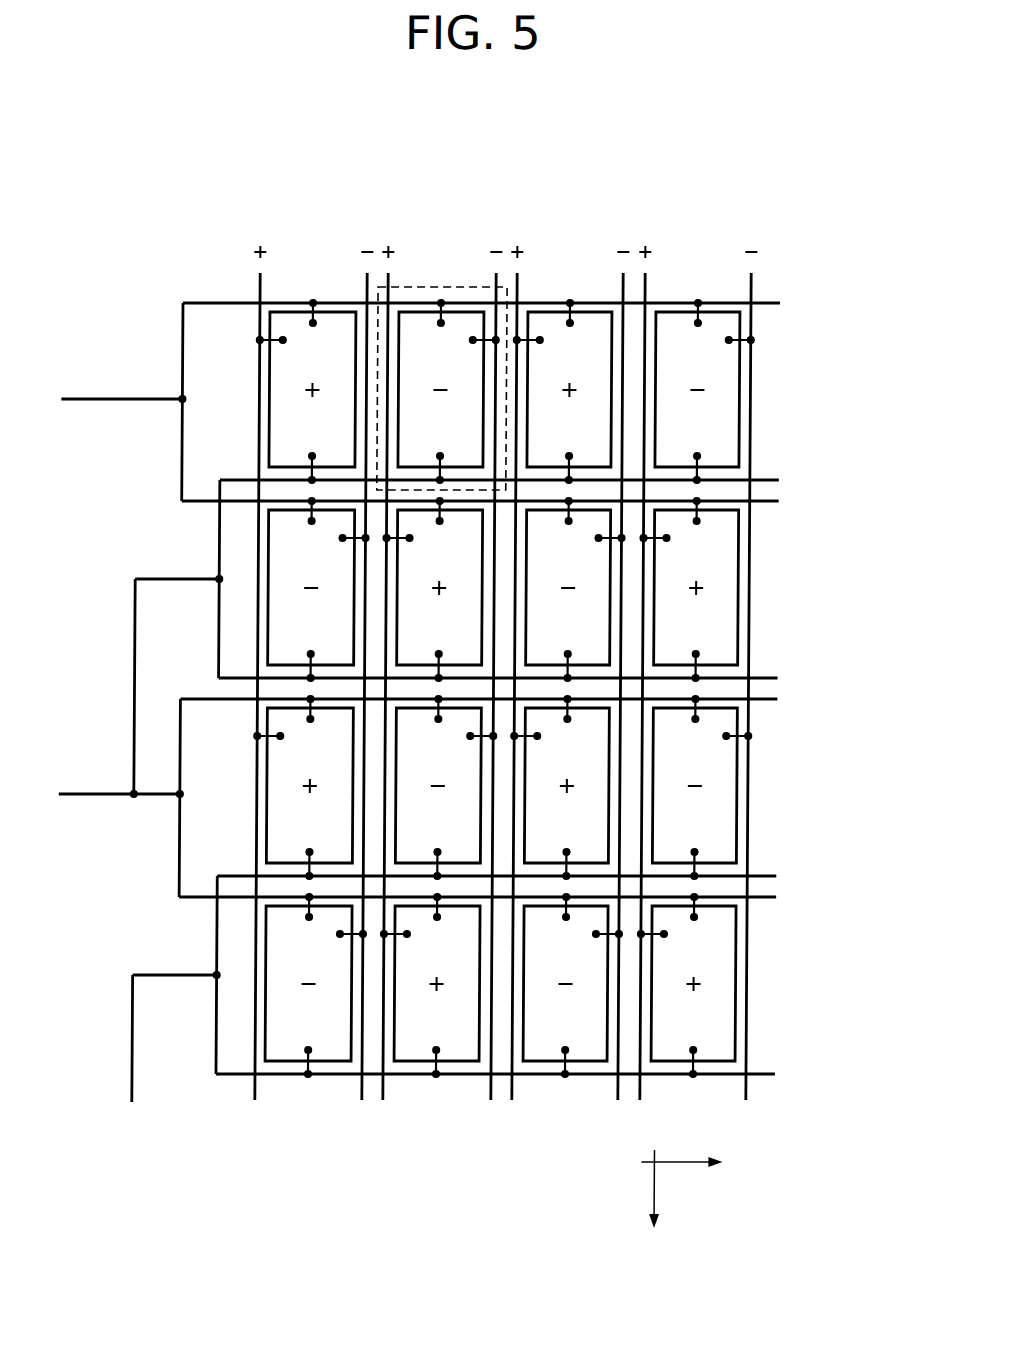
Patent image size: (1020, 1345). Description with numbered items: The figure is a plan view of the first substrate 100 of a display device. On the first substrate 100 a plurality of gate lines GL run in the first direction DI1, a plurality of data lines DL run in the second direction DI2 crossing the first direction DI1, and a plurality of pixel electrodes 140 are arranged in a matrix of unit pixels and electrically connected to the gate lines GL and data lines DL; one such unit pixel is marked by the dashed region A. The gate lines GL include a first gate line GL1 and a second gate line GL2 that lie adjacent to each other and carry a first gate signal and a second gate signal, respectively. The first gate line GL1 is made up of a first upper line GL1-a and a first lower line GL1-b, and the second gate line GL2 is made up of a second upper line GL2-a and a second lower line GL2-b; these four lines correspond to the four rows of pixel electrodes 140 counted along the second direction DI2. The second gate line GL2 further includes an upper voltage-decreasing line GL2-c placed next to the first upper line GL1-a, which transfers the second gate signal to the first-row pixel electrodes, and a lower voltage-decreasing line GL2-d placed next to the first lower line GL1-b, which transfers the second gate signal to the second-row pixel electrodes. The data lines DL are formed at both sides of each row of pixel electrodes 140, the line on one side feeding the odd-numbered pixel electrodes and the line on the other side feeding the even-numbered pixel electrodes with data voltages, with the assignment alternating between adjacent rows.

The first substrate 100 is at (794, 279).
The pixel electrode 140 is at (285, 361).
The data lines DL is at (752, 200).
The gate lines GL is at (57, 535).
The first gate line GL1 is at (83, 400).
The second gate line GL2 is at (80, 793).
The first upper line GL1-a is at (780, 303).
The first lower line GL1-b is at (780, 501).
The second upper line GL2-a is at (780, 699).
The second lower line GL2-b is at (780, 897).
The upper voltage-decreasing line GL2-c is at (780, 480).
The lower voltage-decreasing line GL2-d is at (780, 678).
The pixel region A is at (441, 287).
The first direction DI1 is at (702, 1162).
The second direction DI2 is at (650, 1205).